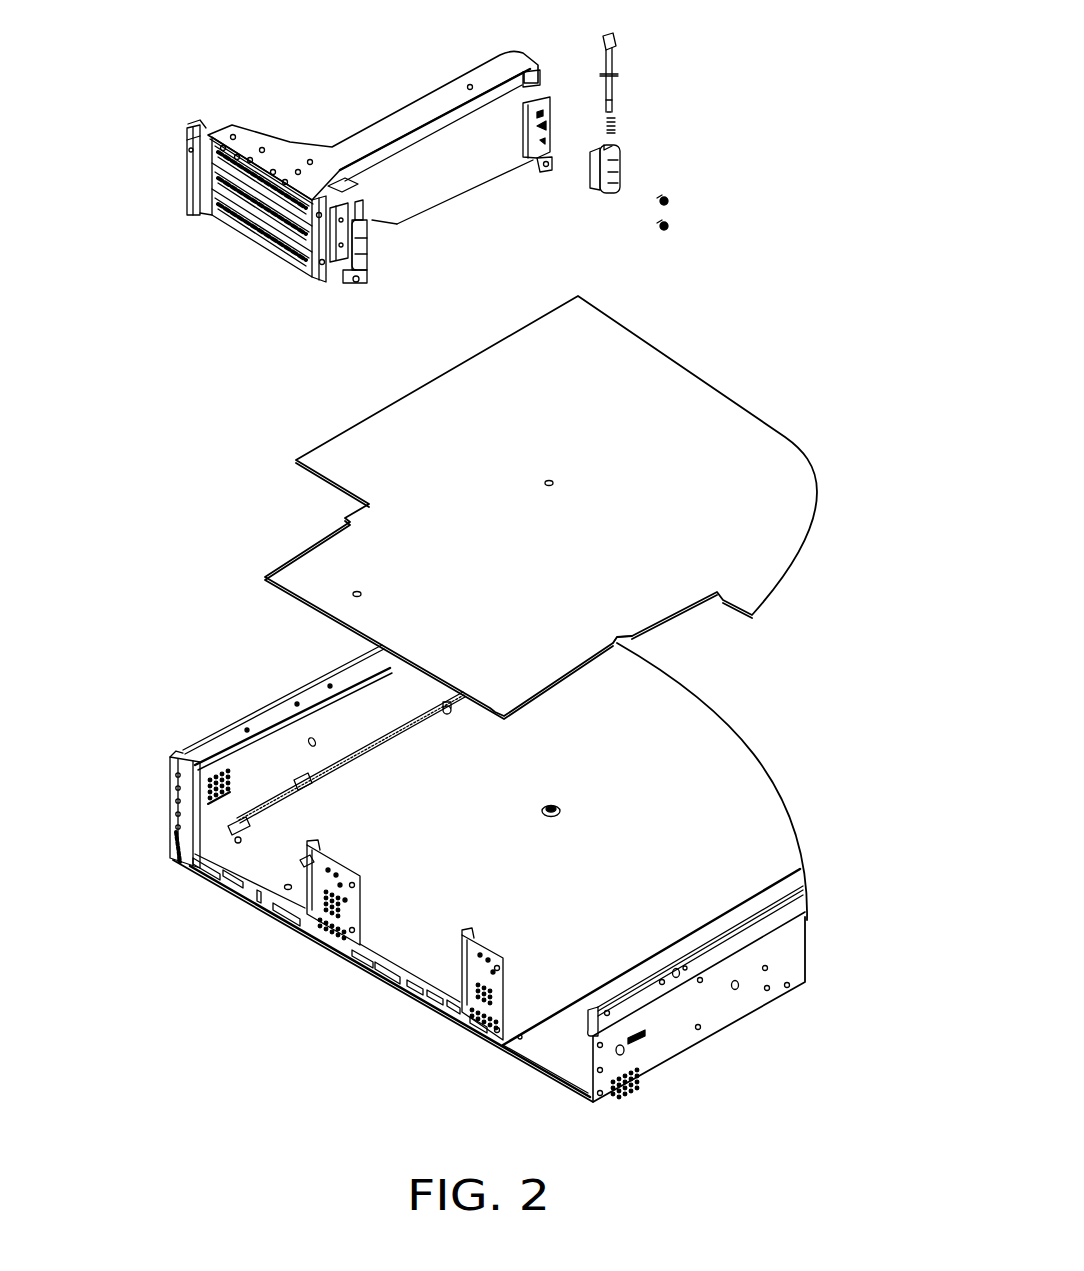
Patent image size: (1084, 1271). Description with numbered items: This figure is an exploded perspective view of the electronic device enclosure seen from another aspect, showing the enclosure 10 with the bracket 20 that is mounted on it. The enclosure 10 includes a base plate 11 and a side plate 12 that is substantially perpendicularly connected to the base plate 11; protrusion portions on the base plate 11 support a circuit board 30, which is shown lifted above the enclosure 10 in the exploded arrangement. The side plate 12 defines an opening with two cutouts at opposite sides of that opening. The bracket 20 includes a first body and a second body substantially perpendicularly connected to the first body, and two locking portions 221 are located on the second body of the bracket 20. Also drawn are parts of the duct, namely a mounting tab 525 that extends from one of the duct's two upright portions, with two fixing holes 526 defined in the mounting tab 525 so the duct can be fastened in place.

The enclosure 10 is at (792, 793).
The base plate 11 is at (702, 757).
The side plate 12 is at (188, 817).
The bracket 20 is at (263, 108).
The locking portions 221 is at (188, 148).
The circuit board 30 is at (685, 393).
The mounting tab 525 is at (588, 173).
The fixing holes 526 is at (592, 187).